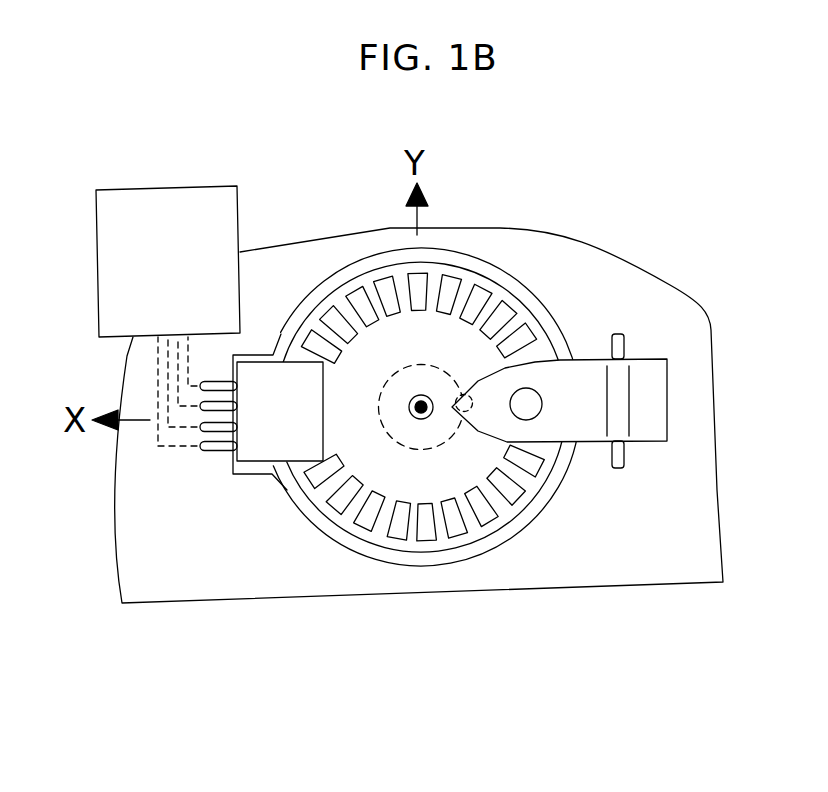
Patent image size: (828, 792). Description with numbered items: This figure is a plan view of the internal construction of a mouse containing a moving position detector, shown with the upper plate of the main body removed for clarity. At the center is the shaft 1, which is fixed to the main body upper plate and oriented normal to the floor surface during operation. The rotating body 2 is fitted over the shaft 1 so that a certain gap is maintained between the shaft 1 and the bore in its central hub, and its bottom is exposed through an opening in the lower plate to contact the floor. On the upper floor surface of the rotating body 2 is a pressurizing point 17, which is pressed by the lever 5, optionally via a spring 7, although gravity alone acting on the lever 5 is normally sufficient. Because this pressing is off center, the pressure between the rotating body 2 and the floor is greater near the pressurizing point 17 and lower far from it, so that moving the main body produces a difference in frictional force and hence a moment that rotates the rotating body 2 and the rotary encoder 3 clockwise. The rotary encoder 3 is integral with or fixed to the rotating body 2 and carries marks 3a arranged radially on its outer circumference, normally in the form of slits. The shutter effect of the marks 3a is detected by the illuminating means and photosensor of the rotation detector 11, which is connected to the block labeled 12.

The shaft 1 is at (421, 398).
The rotating body 2 is at (413, 367).
The rotary encoder 3 is at (419, 552).
The marks 3a is at (387, 533).
The lever 5 is at (590, 442).
The spring 7 is at (525, 388).
The rotation detector 11 is at (260, 463).
The control circuit 12 is at (200, 188).
The pressurizing point 17 is at (463, 393).